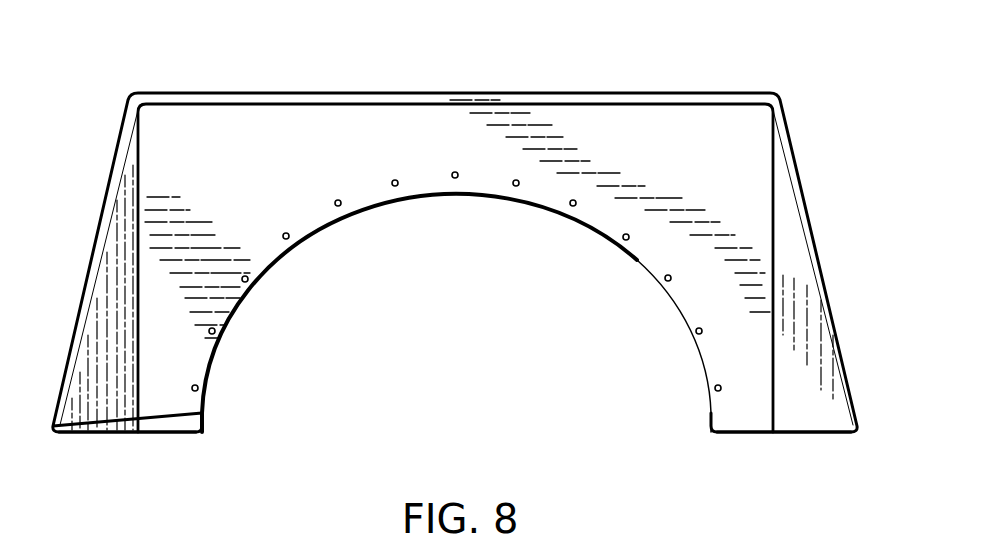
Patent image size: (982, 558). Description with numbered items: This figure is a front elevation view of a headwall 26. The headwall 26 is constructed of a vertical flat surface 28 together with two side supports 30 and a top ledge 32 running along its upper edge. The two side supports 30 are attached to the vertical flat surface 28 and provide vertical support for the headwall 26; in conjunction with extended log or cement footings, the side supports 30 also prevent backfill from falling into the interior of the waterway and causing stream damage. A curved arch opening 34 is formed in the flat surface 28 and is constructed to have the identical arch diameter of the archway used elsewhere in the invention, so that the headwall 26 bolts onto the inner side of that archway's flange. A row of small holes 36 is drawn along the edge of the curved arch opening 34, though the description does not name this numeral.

The headwall 26 is at (192, 79).
The flat surface 28 is at (668, 174).
The side supports 30 is at (96, 404).
The top ledge 32 is at (573, 92).
The curved arch opening 34 is at (322, 228).
The mounting holes 36 is at (666, 276).